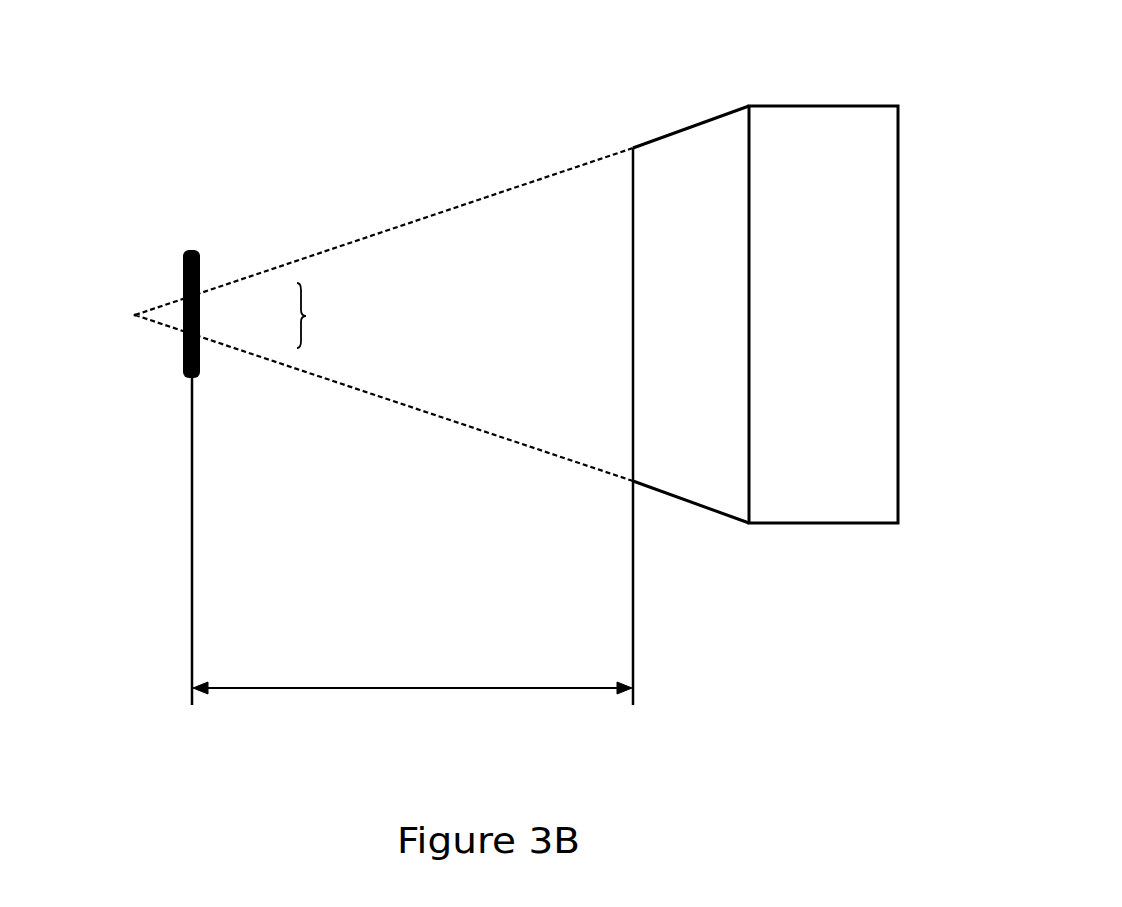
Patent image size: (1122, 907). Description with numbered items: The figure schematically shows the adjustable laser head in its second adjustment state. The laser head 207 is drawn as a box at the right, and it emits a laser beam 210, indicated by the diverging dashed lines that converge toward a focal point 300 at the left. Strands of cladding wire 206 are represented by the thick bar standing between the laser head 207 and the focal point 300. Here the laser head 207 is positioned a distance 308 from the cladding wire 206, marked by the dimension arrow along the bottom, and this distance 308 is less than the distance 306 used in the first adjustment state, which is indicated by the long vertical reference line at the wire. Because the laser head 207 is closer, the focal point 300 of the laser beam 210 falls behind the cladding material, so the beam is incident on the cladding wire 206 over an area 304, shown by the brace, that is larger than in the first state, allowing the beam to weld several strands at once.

The cladding wire 206 is at (192, 250).
The laser head 207 is at (798, 106).
The laser beam 210 is at (363, 237).
The focal point 300 is at (135, 315).
The area 304 is at (325, 315).
The distance 306 is at (193, 530).
The distance 308 is at (385, 690).